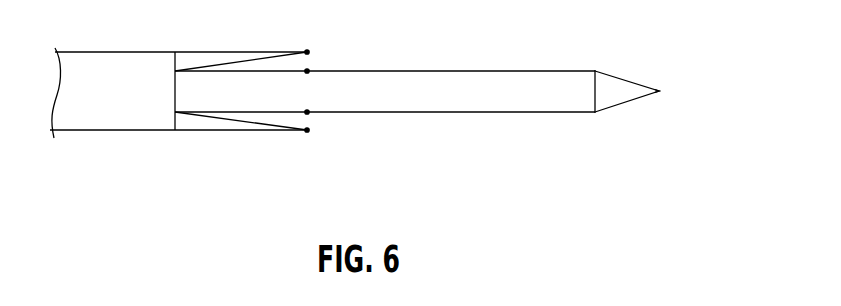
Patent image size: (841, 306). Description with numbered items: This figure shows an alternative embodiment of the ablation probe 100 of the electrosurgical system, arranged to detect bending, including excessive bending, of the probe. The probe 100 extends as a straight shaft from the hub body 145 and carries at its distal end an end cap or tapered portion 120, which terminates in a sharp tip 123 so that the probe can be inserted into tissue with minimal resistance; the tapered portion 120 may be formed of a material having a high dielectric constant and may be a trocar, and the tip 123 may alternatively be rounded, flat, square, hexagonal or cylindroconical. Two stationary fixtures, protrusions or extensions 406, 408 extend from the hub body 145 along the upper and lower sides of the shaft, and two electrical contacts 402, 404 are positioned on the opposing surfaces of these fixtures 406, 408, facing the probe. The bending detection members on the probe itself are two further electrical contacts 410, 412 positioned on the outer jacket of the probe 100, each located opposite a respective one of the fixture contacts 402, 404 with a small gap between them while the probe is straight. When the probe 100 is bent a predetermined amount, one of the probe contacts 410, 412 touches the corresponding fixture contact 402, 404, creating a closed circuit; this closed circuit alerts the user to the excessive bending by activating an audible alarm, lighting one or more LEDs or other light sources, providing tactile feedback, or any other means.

The ablation probe 100 is at (440, 66).
The end cap or tapered portion 120 is at (612, 75).
The sharp tip 123 is at (659, 91).
The hub body 145 is at (118, 52).
The electrical contact 402 is at (307, 52).
The electrical contact 404 is at (307, 130).
The stationary fixture 406 is at (225, 52).
The stationary fixture 408 is at (225, 130).
The electrical contact 410 is at (307, 71).
The electrical contact 412 is at (307, 112).